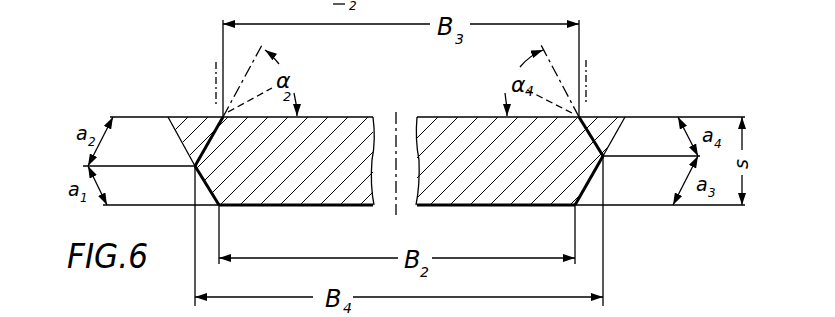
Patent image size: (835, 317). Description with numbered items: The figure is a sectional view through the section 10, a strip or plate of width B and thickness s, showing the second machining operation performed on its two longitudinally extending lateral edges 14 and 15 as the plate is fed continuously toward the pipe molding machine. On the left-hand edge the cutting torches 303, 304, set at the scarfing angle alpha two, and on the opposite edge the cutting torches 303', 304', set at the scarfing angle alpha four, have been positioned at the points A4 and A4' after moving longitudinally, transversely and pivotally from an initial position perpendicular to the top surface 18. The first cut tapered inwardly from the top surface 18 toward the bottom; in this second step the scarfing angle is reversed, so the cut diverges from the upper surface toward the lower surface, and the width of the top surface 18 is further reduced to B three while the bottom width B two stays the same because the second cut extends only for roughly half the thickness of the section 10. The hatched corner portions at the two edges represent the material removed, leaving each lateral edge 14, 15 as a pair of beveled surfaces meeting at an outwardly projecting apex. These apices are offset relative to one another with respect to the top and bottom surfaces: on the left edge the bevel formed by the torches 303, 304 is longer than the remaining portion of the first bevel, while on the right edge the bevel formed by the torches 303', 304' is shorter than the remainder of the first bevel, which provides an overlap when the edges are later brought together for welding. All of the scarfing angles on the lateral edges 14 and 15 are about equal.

The section 10 is at (447, 130).
The lateral edge 14 is at (177, 142).
The lateral edge 15 is at (621, 135).
The top surface 18 is at (318, 117).
The cutting torch 303 is at (153, 58).
The cutting torch 304 is at (153, 58).
The cutting torch 303' is at (632, 58).
The cutting torch 304' is at (654, 58).
The point A4 is at (196, 68).
The point A4' is at (610, 68).